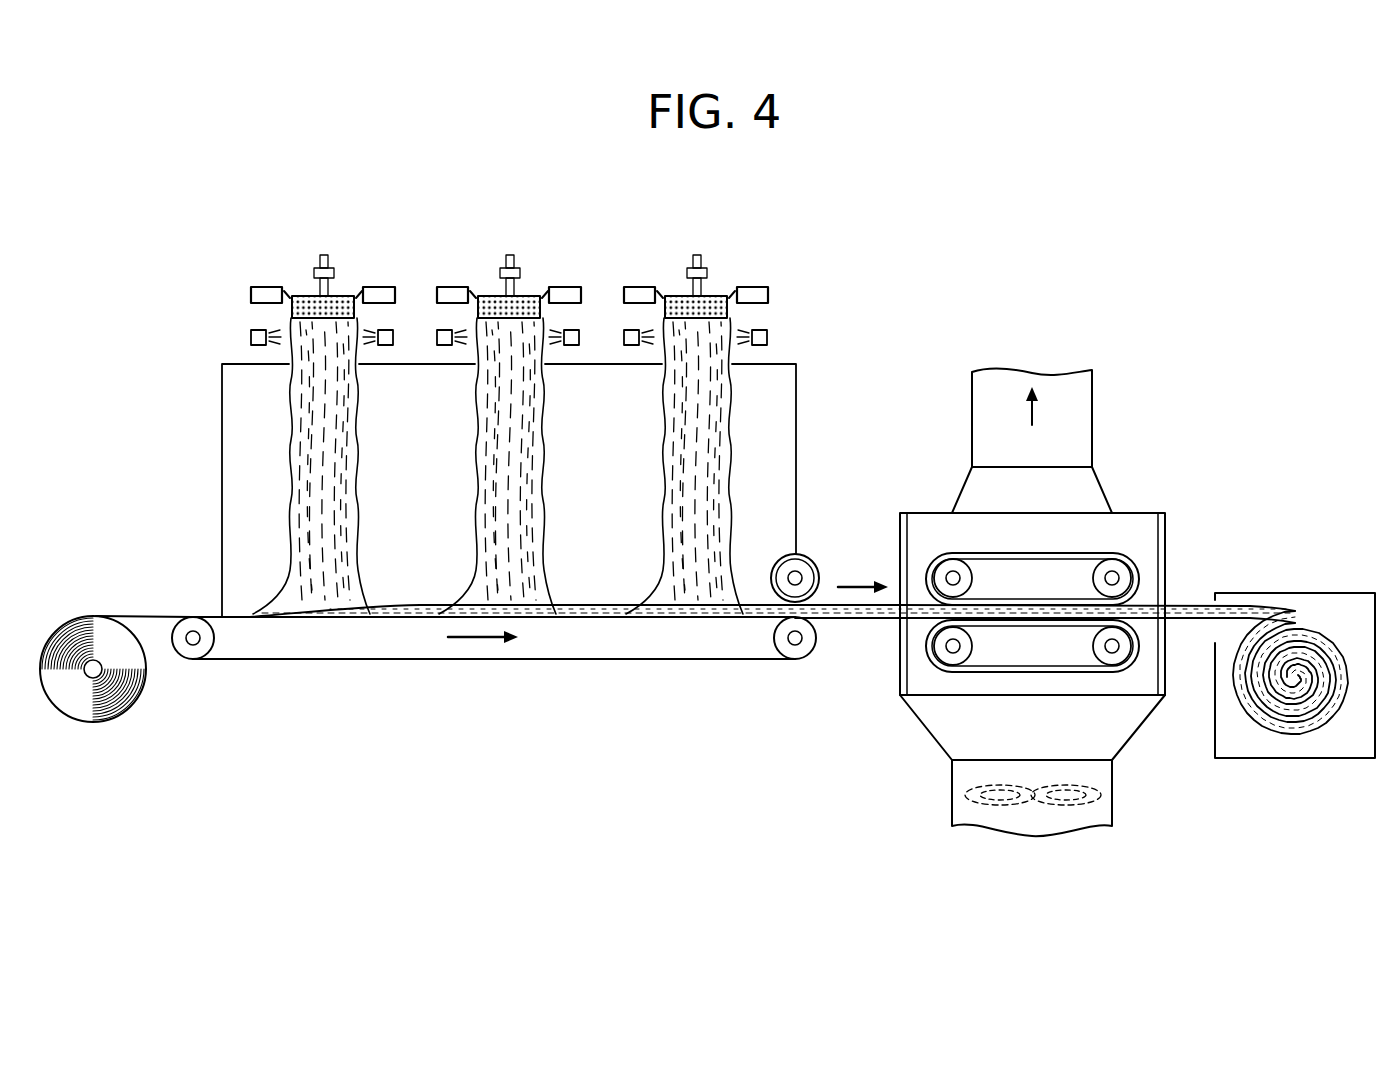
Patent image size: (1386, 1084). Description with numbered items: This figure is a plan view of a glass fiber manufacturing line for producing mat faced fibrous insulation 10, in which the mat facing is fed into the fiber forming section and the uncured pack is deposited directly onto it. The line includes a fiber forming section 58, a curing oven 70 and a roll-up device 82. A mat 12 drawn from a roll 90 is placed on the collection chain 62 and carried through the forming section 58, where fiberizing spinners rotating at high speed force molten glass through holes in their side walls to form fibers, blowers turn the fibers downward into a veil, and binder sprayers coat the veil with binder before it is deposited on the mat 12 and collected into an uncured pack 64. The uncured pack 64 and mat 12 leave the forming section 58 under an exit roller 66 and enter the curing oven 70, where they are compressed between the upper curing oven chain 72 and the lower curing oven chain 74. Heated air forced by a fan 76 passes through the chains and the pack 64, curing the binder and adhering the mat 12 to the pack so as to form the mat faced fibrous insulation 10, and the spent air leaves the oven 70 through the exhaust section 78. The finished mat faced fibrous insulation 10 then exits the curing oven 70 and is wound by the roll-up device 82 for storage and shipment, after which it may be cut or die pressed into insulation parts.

The mat faced fibrous insulation 10 is at (1194, 590).
The mat 12 is at (140, 617).
The fiber forming section 58 is at (200, 447).
The collection chain 62 is at (205, 617).
The uncured pack 64 is at (585, 603).
The exit roller 66 is at (808, 555).
The curing oven 70 is at (1075, 640).
The upper curing oven chain 72 is at (1033, 553).
The lower curing oven chain 74 is at (1050, 620).
The fan 76 is at (997, 812).
The exhaust section 78 is at (1037, 502).
The roll-up device 82 is at (1266, 740).
The roll 90 is at (120, 690).